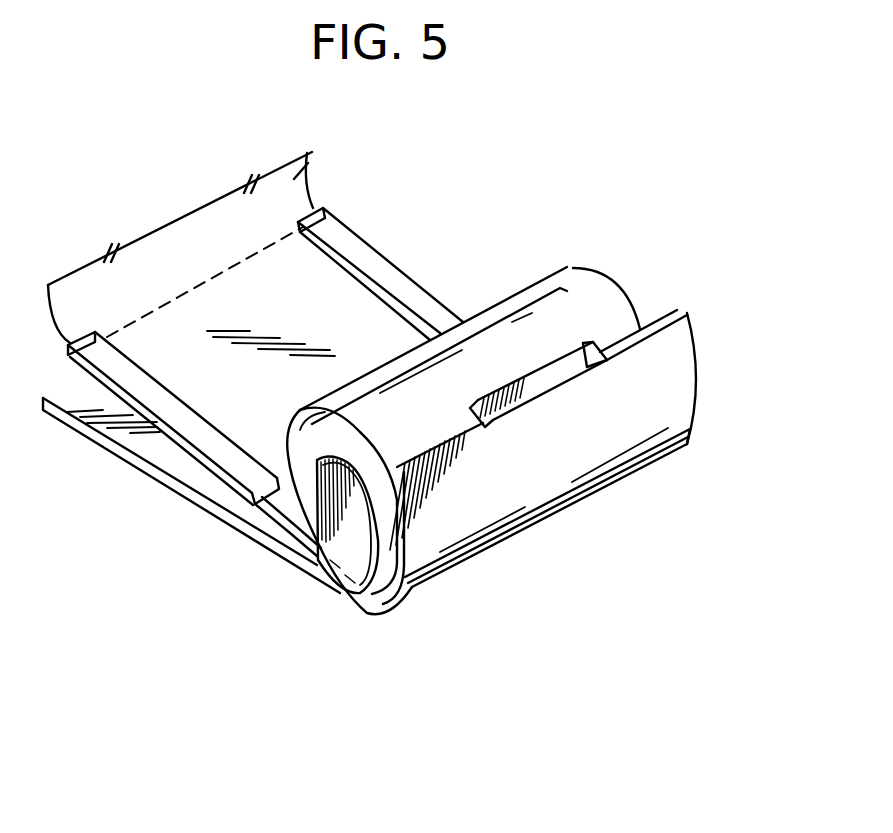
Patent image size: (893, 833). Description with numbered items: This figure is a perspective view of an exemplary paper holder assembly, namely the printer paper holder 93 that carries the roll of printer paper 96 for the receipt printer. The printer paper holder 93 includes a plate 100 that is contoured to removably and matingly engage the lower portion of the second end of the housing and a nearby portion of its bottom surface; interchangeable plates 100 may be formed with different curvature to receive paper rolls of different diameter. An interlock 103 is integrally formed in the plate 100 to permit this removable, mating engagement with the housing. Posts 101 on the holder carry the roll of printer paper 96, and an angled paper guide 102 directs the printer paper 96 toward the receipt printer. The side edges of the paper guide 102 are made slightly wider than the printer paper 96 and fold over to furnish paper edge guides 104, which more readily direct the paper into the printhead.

The printer paper holder 93 is at (570, 500).
The printer paper 96 is at (290, 180).
The plate 100 is at (475, 543).
The posts 101 is at (358, 555).
The angled paper guide 102 is at (286, 536).
The interlock 103 is at (587, 362).
The paper edge guides 104 is at (385, 267).